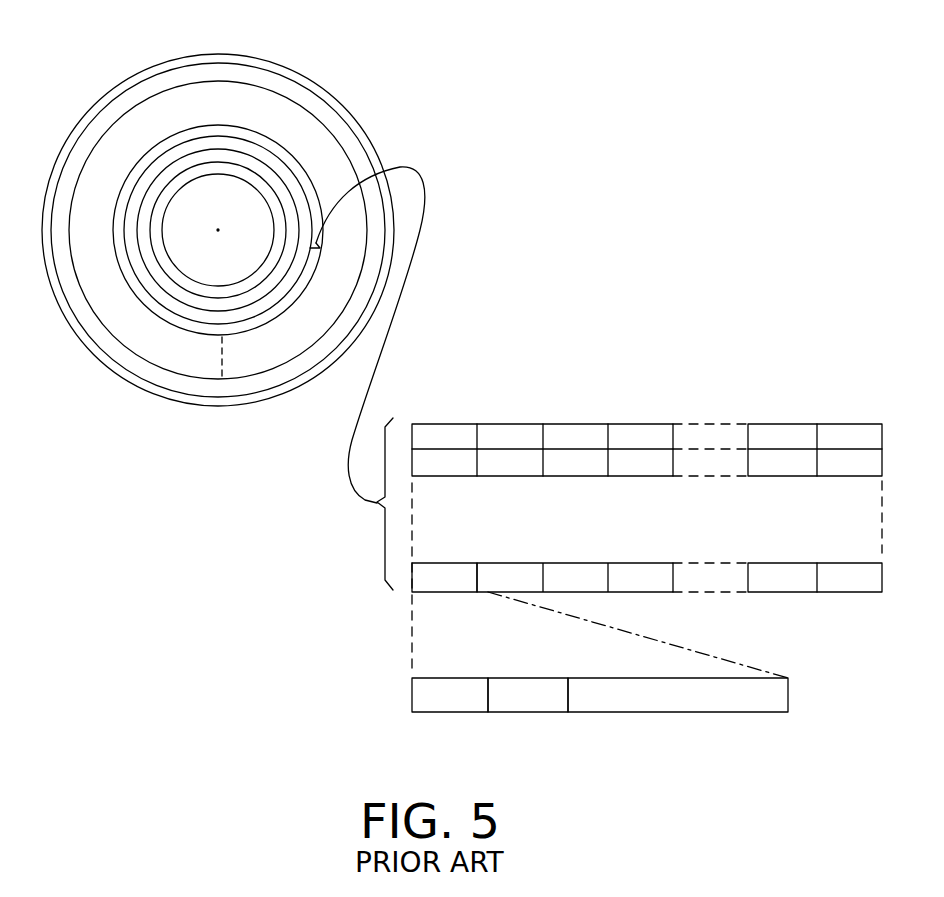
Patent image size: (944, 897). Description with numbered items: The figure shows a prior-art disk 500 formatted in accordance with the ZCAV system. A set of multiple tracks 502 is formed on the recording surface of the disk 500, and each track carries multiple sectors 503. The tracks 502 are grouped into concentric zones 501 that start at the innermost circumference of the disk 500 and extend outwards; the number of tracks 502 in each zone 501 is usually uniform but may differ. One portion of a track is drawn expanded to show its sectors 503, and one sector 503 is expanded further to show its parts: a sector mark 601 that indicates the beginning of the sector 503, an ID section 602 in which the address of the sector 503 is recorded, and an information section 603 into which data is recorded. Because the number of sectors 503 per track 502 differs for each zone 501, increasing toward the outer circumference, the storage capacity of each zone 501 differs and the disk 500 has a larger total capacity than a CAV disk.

The disk 500 is at (285, 56).
The zone 501 is at (256, 62).
The track 502 is at (420, 403).
The sector 503 is at (453, 562).
The sector mark 601 is at (455, 713).
The ID section 602 is at (545, 713).
The information section 603 is at (685, 713).